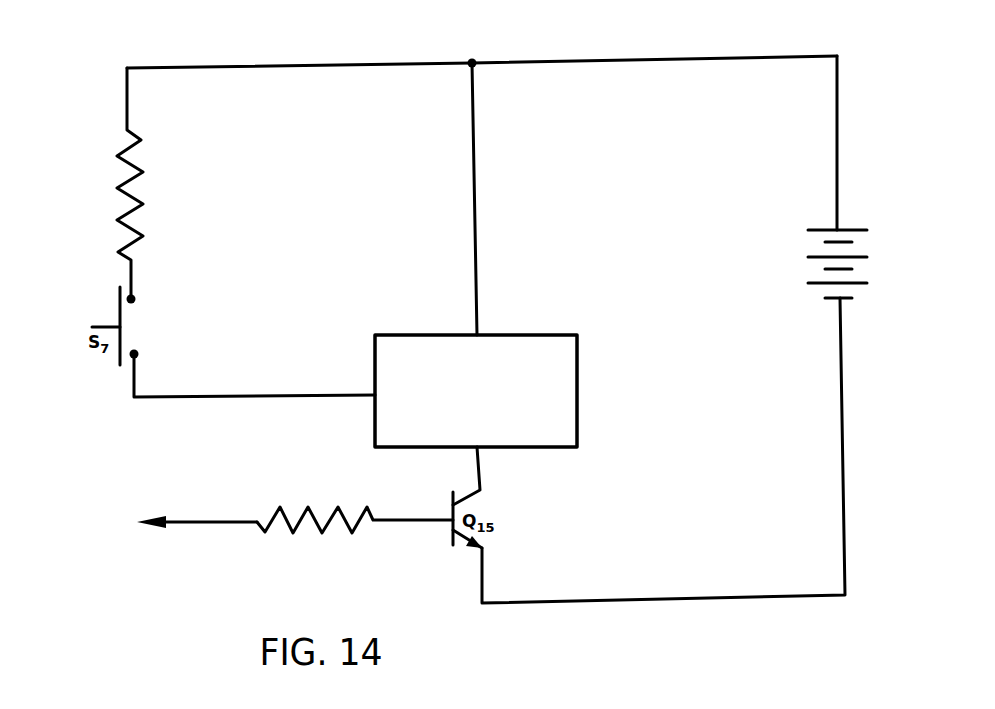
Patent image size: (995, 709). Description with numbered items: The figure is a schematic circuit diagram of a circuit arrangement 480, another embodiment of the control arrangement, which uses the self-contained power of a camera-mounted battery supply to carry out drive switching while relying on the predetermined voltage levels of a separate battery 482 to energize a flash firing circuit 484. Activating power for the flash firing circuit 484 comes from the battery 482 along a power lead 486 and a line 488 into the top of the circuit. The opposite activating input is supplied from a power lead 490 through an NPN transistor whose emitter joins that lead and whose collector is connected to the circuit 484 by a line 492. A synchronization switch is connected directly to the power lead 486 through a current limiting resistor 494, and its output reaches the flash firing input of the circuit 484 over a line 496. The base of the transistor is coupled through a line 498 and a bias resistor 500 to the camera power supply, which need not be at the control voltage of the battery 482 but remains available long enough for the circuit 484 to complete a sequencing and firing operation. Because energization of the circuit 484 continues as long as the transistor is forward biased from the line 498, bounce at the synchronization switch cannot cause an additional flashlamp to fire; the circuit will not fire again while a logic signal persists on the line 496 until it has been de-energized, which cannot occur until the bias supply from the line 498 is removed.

The circuit arrangement 480 is at (855, 171).
The battery 482 is at (857, 255).
The flash firing circuit 484 is at (503, 335).
The power lead 486 is at (590, 60).
The line 488 is at (476, 137).
The power lead 490 is at (800, 593).
The line 492 is at (481, 463).
The current limiting resistor 494 is at (130, 177).
The line 496 is at (290, 394).
The line 498 is at (218, 523).
The bias resistor 500 is at (330, 522).